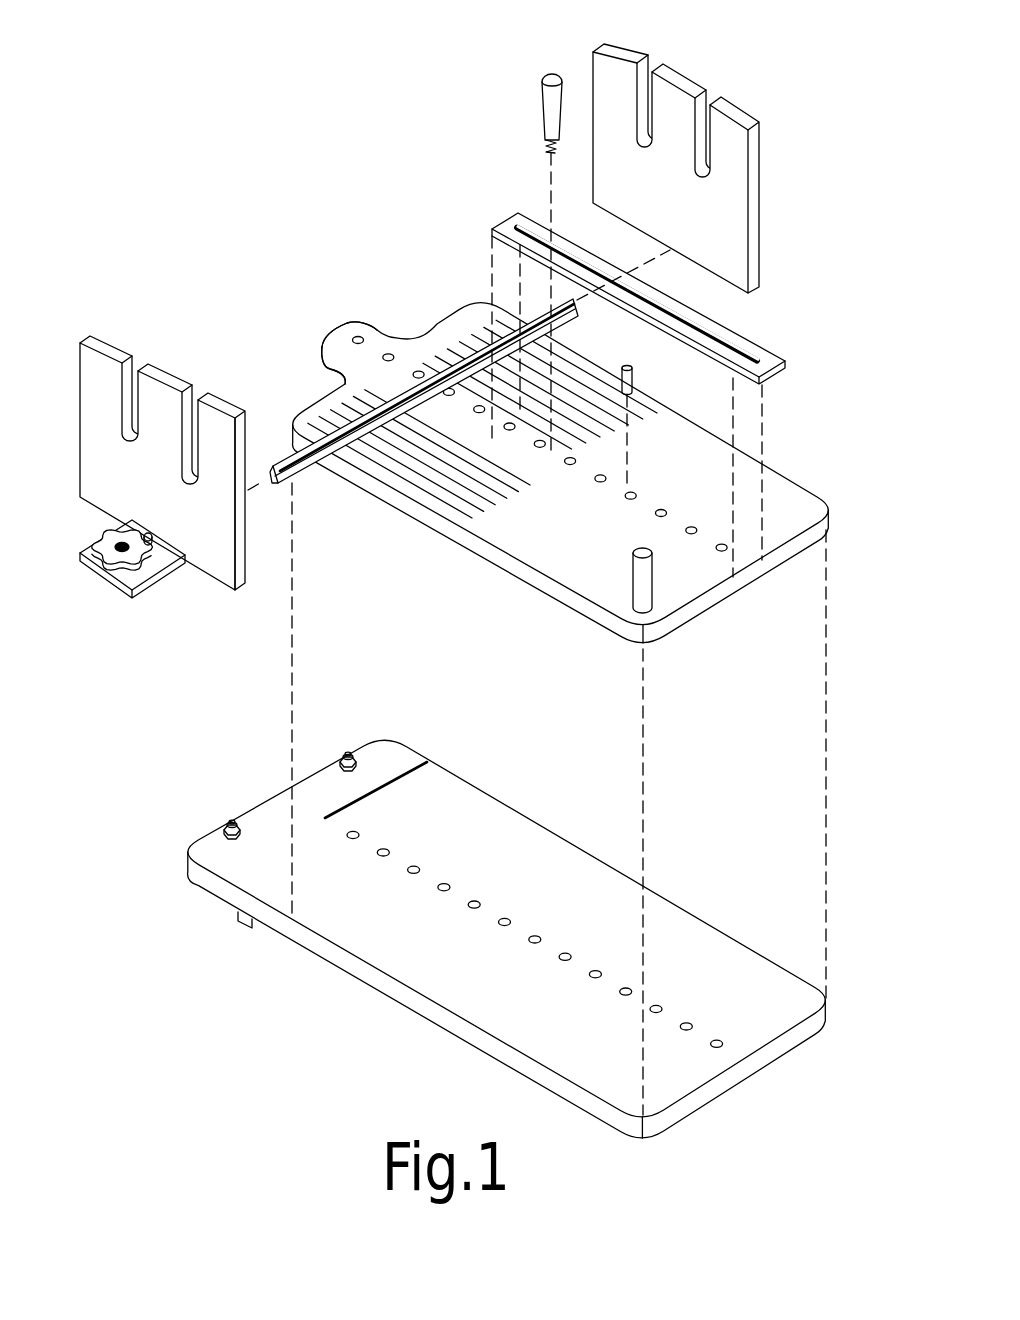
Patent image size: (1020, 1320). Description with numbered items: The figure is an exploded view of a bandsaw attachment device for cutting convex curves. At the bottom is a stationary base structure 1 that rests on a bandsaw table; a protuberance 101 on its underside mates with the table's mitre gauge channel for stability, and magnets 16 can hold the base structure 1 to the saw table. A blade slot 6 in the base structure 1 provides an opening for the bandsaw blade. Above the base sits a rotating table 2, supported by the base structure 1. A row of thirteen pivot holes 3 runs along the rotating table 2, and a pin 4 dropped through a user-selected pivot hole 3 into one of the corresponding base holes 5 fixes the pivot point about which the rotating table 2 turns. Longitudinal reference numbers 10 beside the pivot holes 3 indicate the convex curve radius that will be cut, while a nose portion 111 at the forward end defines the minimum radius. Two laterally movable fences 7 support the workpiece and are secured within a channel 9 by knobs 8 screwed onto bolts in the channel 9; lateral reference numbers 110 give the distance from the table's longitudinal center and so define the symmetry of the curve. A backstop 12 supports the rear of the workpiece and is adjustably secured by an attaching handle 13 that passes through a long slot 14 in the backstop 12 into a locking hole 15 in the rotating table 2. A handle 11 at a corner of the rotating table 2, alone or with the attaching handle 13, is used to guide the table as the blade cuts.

The stationary base structure 1 is at (488, 1055).
The rotating table 2 is at (565, 409).
The pivot holes 3 is at (718, 555).
The pin 4 is at (626, 363).
The base holes 5 is at (356, 832).
The blade slot 6 is at (425, 762).
The lateral fences 7 is at (112, 334).
The knob 8 is at (120, 548).
The channel 9 is at (273, 470).
The longitudinal reference numbers 10 is at (338, 333).
The handle 11 is at (644, 598).
The backstop 12 is at (693, 395).
The attaching handle 13 is at (548, 112).
The long slot 14 is at (752, 348).
The locking hole 15 is at (550, 458).
The magnets 16 is at (348, 757).
The protuberance 101 is at (246, 919).
The lateral reference numbers 110 is at (325, 398).
The nose portion 111 is at (342, 323).